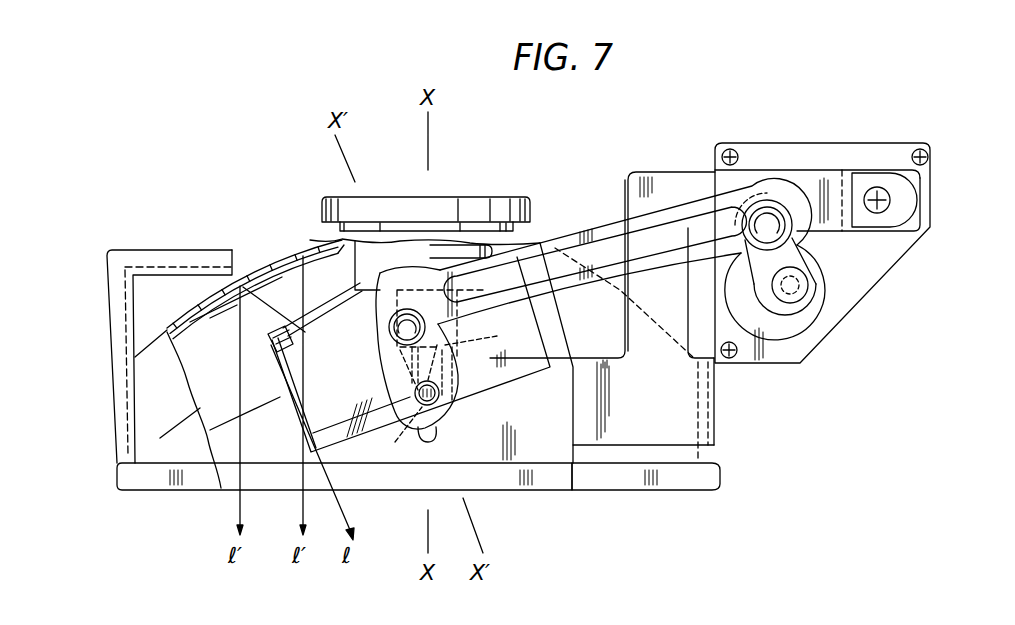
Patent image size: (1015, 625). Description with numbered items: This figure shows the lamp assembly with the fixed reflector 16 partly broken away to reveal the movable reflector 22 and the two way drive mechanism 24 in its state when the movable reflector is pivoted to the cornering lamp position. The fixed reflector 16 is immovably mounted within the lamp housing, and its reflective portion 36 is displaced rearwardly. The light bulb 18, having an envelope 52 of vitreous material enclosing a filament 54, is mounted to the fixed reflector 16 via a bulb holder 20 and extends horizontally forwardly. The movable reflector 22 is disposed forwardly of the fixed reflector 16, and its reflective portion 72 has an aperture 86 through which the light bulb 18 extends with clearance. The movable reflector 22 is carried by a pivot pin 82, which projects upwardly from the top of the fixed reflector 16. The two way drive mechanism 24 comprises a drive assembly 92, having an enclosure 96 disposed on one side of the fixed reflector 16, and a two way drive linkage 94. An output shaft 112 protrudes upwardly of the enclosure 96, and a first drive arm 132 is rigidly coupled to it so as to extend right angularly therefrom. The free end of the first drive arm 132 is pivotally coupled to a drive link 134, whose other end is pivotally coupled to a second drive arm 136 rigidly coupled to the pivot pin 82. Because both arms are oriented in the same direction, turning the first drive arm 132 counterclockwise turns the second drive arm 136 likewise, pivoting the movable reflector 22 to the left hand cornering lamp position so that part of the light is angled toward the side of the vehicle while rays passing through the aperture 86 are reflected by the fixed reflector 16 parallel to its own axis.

The fixed reflector 16 is at (306, 244).
The light bulb 18 is at (500, 320).
The bulb holder 20 is at (482, 195).
The movable reflector 22 is at (262, 339).
The two way drive mechanism 24 is at (853, 201).
The reflective portion 36 is at (262, 272).
The envelope 52 is at (417, 440).
The filament 54 is at (395, 435).
The reflective portion 72 is at (282, 362).
The pivot pin 82 is at (432, 407).
The aperture 86 is at (296, 312).
The drive assembly 92 is at (913, 249).
The two way drive linkage 94 is at (673, 207).
The enclosure 96 is at (835, 146).
The output shaft 112 is at (800, 290).
The first drive arm 132 is at (816, 266).
The drive link 134 is at (607, 226).
The second drive arm 136 is at (418, 393).